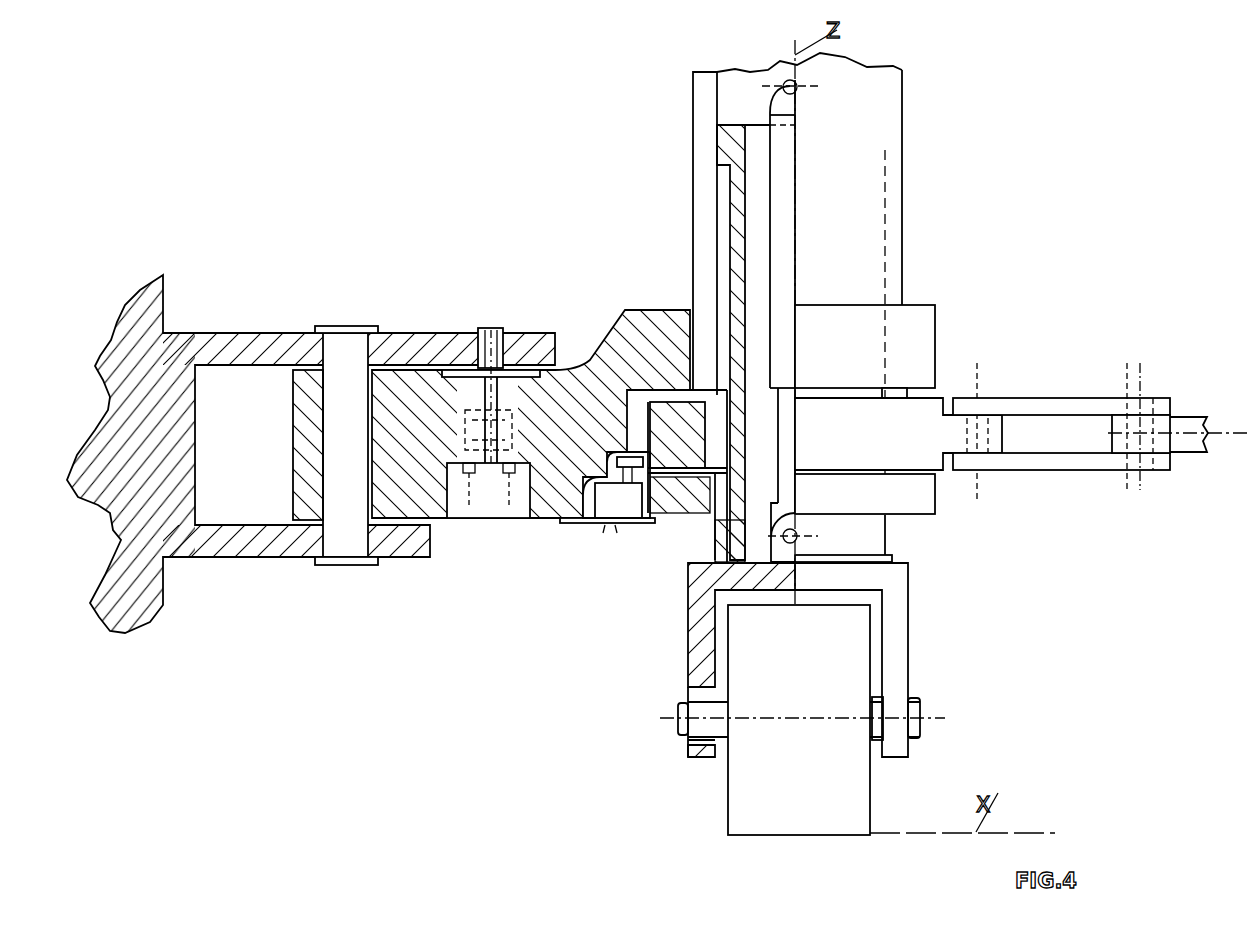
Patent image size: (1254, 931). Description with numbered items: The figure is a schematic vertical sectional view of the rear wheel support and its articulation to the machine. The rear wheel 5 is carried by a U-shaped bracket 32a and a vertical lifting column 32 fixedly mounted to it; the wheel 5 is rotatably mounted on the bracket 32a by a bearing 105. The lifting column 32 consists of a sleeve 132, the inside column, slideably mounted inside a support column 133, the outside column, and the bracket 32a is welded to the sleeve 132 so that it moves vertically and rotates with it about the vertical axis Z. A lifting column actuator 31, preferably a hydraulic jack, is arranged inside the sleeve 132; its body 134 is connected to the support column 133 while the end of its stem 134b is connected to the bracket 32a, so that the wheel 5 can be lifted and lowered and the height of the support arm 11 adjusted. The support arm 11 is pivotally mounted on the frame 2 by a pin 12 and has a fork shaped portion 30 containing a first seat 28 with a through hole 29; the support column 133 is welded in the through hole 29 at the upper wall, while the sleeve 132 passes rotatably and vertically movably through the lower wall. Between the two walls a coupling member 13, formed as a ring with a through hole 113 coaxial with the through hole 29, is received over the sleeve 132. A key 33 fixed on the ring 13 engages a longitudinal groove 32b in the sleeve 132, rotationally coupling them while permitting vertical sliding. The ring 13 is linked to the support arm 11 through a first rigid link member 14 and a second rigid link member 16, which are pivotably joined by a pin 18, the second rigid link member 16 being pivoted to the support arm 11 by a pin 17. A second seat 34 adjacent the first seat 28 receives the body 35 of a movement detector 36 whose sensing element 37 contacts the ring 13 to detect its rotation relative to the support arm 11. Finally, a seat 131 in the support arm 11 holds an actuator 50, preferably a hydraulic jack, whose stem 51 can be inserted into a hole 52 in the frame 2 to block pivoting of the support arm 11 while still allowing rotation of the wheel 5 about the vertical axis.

The frame 2 is at (238, 344).
The rear wheel 5 is at (742, 808).
The support arm 11 is at (627, 308).
The pin 12 is at (342, 360).
The coupling member 13 is at (931, 408).
The first rigid link member 14 is at (1065, 463).
The second rigid link member 16 is at (1190, 425).
The pin 17 is at (986, 428).
The pin 18 is at (1148, 428).
The first seat 28 is at (920, 375).
The through hole 29 is at (882, 322).
The fork shaped portion 30 is at (949, 264).
The lifting column actuator 31 is at (786, 158).
The lifting column 32 is at (691, 200).
The U-shaped bracket 32a is at (878, 577).
The groove 32b is at (733, 243).
The key 33 is at (727, 398).
The second seat 34 is at (586, 516).
The body 35 is at (603, 510).
The movement detector 36 is at (612, 542).
The sensing element 37 is at (562, 521).
The actuator 50 is at (470, 452).
The stem 51 is at (494, 340).
The hole 52 is at (468, 345).
The bearing 105 is at (916, 688).
The through hole 113 is at (886, 457).
The seat 131 is at (456, 424).
The sleeve 132 is at (734, 150).
The support column 133 is at (708, 92).
The body 134 is at (780, 236).
The stem 134b is at (785, 480).